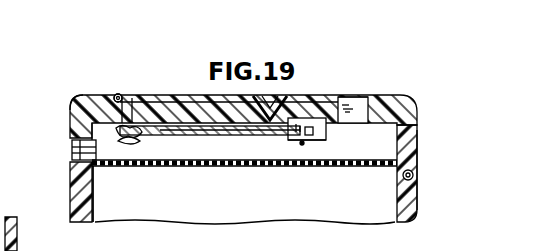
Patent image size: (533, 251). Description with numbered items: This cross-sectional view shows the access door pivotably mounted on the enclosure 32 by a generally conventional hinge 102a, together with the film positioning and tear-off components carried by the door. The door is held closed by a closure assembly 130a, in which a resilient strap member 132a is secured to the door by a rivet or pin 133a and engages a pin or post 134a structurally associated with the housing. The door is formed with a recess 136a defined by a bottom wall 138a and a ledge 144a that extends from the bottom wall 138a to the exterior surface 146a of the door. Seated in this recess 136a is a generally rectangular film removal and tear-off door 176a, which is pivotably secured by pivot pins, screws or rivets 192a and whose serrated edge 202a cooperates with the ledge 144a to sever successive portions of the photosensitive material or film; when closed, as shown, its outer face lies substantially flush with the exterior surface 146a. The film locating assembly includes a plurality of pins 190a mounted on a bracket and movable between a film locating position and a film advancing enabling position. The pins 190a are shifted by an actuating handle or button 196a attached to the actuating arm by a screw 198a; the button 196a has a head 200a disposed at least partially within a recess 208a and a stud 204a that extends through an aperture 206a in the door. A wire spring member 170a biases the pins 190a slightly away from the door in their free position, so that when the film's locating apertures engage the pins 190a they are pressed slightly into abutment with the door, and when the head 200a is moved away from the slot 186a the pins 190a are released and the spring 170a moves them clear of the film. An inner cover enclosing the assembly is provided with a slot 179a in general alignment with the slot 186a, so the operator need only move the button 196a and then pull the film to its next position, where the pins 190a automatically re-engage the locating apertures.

The enclosure 32 is at (55, 249).
The hinge 102a is at (401, 176).
The closure assembly 130a is at (70, 181).
The resilient strap member 132a is at (70, 188).
The rivet or pin 133a is at (84, 146).
The pin or post 134a is at (97, 195).
The recess 136a is at (146, 91).
The bottom wall 138a is at (213, 100).
The ledge 144a is at (261, 113).
The exterior surface 146a is at (82, 94).
The spring member 170a is at (199, 164).
The film removal and tear-off door 176a is at (125, 92).
The slot 179a is at (245, 208).
The slot 186a is at (78, 114).
The pins 190a is at (126, 198).
The pivot pins 192a is at (117, 94).
The actuating handle or button 196a is at (334, 100).
The screw 198a is at (309, 140).
The head 200a is at (308, 100).
The serrated edge 202a is at (197, 100).
The stud 204a is at (314, 132).
The aperture 206a is at (392, 101).
The recess 208a is at (353, 97).